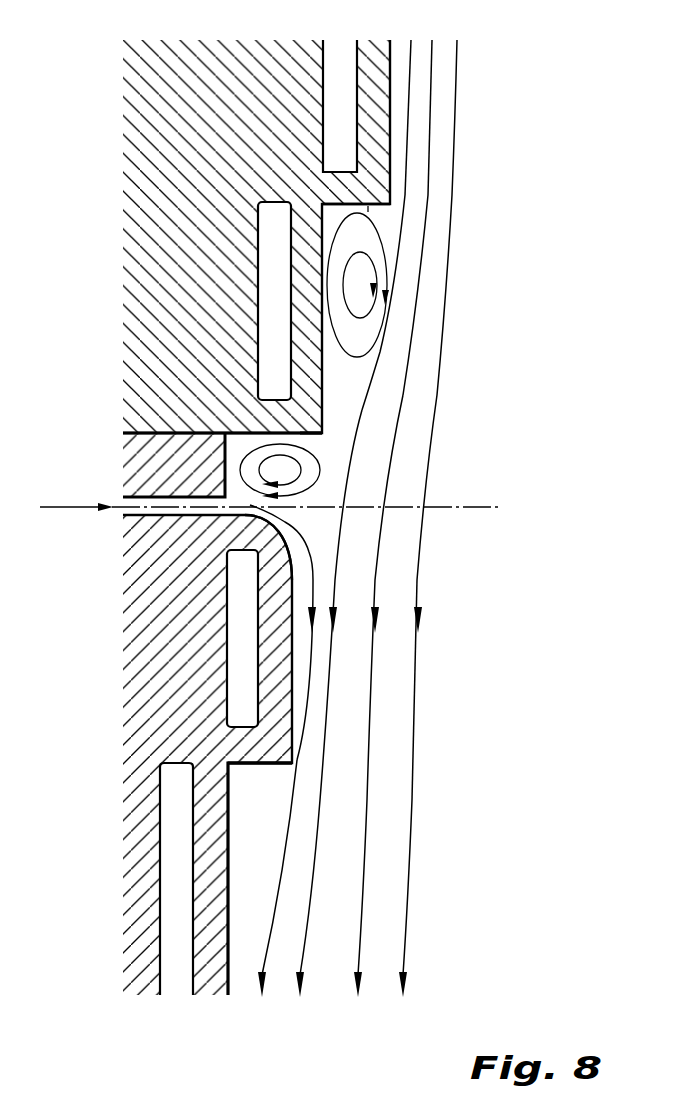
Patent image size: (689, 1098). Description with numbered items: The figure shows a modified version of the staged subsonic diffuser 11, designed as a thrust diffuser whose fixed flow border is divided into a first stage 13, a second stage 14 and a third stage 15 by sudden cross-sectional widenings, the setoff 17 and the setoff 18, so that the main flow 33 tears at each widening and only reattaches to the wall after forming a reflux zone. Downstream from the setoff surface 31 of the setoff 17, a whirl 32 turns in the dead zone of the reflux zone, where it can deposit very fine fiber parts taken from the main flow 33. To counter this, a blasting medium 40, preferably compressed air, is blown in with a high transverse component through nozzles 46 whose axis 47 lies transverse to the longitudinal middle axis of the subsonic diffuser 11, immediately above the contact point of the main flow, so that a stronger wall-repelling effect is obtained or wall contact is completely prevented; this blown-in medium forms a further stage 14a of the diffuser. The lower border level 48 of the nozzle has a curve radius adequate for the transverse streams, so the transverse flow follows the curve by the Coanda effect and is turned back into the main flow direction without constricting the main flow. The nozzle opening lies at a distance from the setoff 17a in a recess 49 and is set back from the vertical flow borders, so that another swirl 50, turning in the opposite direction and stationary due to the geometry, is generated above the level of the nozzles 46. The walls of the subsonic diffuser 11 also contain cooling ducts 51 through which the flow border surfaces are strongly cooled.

The subsonic diffuser 11 is at (100, 194).
The stage 13 is at (503, 136).
The stage 14 is at (492, 363).
The stage 14a is at (511, 622).
The stage 15 is at (453, 836).
The setoff 17 is at (398, 211).
The setoff 17a is at (318, 442).
The setoff 18 is at (278, 779).
The setoff surface 31 is at (385, 216).
The whirl 32 is at (363, 268).
The main flow 33 is at (430, 298).
The blasting medium 40 is at (68, 512).
The nozzles 46 is at (140, 497).
The axis 47 is at (460, 500).
The lower border level 48 is at (270, 530).
The recess 49 is at (235, 438).
The swirl 50 is at (293, 472).
The cooling ducts 51 is at (342, 63).